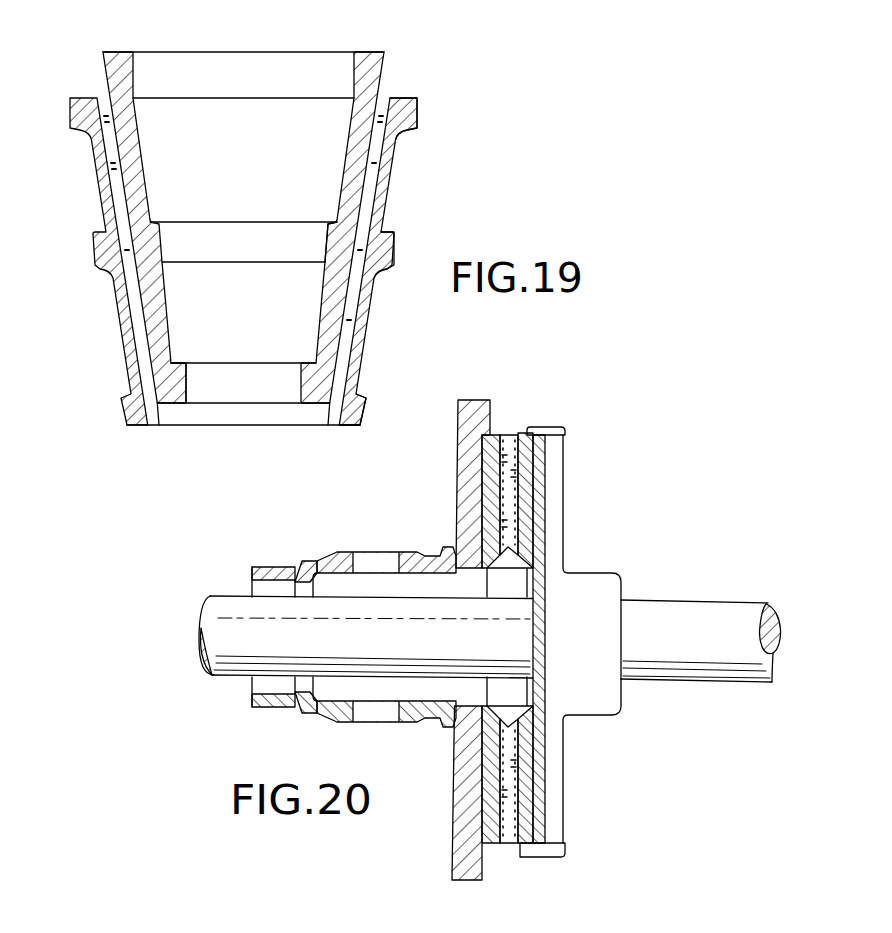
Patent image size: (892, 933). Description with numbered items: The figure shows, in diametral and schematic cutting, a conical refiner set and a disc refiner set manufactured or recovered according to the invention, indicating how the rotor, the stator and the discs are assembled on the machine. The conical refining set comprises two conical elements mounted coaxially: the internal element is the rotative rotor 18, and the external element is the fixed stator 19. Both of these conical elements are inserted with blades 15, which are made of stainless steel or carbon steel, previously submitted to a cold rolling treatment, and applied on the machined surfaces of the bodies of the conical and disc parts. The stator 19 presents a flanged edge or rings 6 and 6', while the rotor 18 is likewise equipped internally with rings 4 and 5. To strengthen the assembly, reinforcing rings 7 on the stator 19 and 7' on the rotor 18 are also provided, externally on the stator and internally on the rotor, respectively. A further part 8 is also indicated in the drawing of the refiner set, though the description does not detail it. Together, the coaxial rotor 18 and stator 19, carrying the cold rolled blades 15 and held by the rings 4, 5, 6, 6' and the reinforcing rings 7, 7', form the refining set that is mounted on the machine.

In FIG. 19, the ring 4 is at (362, 76).
In FIG. 19, the ring 5 is at (178, 393).
In FIG. 19, the flanged edge or ring 6 is at (367, 409).
In FIG. 19, the flanged edge or ring 6' is at (424, 119).
In FIG. 19, the reinforcing ring 7 is at (400, 255).
In FIG. 19, the reinforcing ring 7' is at (381, 219).
In FIG. 20, the packing ring 8 is at (483, 508).
In FIG. 19, the blades 15 is at (333, 345).
In FIG. 20, the blades 15 is at (513, 475).
In FIG. 19, the rotor 18 is at (135, 183).
In FIG. 19, the stator 19 is at (121, 328).